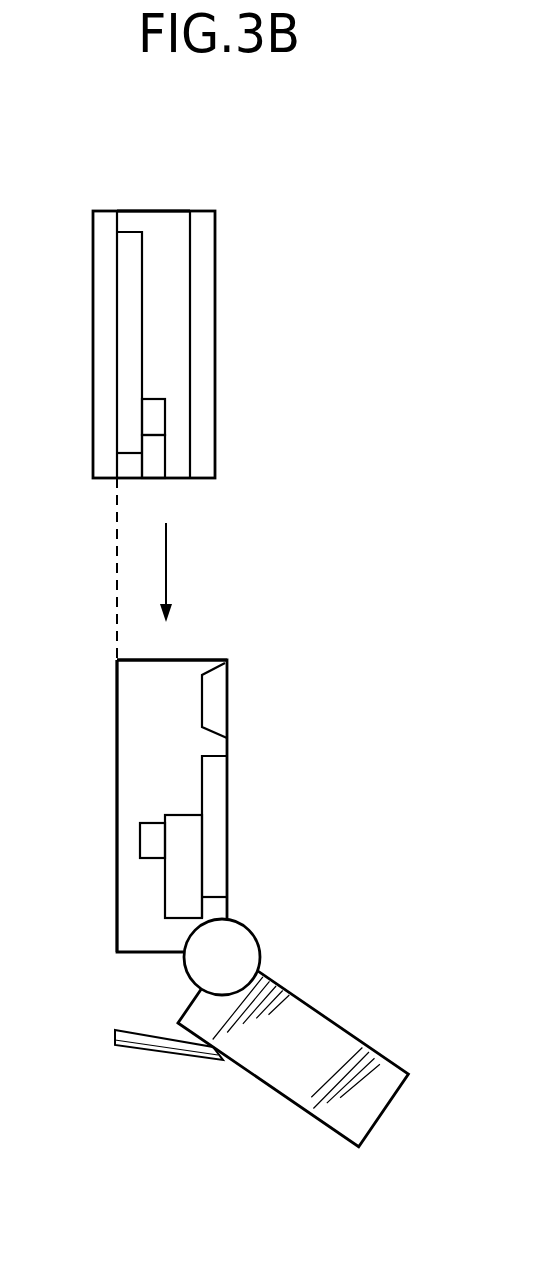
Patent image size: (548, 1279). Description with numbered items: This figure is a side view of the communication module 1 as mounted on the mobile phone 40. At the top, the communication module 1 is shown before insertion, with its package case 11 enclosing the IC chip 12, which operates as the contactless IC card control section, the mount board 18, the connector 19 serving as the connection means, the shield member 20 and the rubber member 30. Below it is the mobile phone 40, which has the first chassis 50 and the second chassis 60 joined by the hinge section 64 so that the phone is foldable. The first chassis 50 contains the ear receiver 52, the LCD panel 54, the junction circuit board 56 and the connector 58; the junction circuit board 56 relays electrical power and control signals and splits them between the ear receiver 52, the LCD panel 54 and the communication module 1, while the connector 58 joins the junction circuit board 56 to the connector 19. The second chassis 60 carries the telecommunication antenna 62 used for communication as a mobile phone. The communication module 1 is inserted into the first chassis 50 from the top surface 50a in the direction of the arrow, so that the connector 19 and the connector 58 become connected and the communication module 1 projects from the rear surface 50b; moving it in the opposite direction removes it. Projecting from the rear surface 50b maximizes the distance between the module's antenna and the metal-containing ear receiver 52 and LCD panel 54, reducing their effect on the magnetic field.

The communication module 1 is at (216, 194).
The package case 11 is at (160, 210).
The IC chip 12 is at (155, 411).
The mount board 18 is at (127, 352).
The connector 19 is at (155, 457).
The shield member 20 is at (205, 268).
The rubber member 30 is at (105, 277).
The mobile phone 40 is at (170, 764).
The first chassis 50 is at (130, 763).
The top surface 50a is at (218, 655).
The rear surface 50b is at (117, 693).
The ear receiver 52 is at (217, 700).
The LCD panel 54 is at (217, 807).
The junction circuit board 56 is at (175, 898).
The connector 58 is at (150, 840).
The second chassis 60 is at (337, 1038).
The telecommunication antenna 62 is at (170, 1047).
The hinge section 64 is at (240, 945).